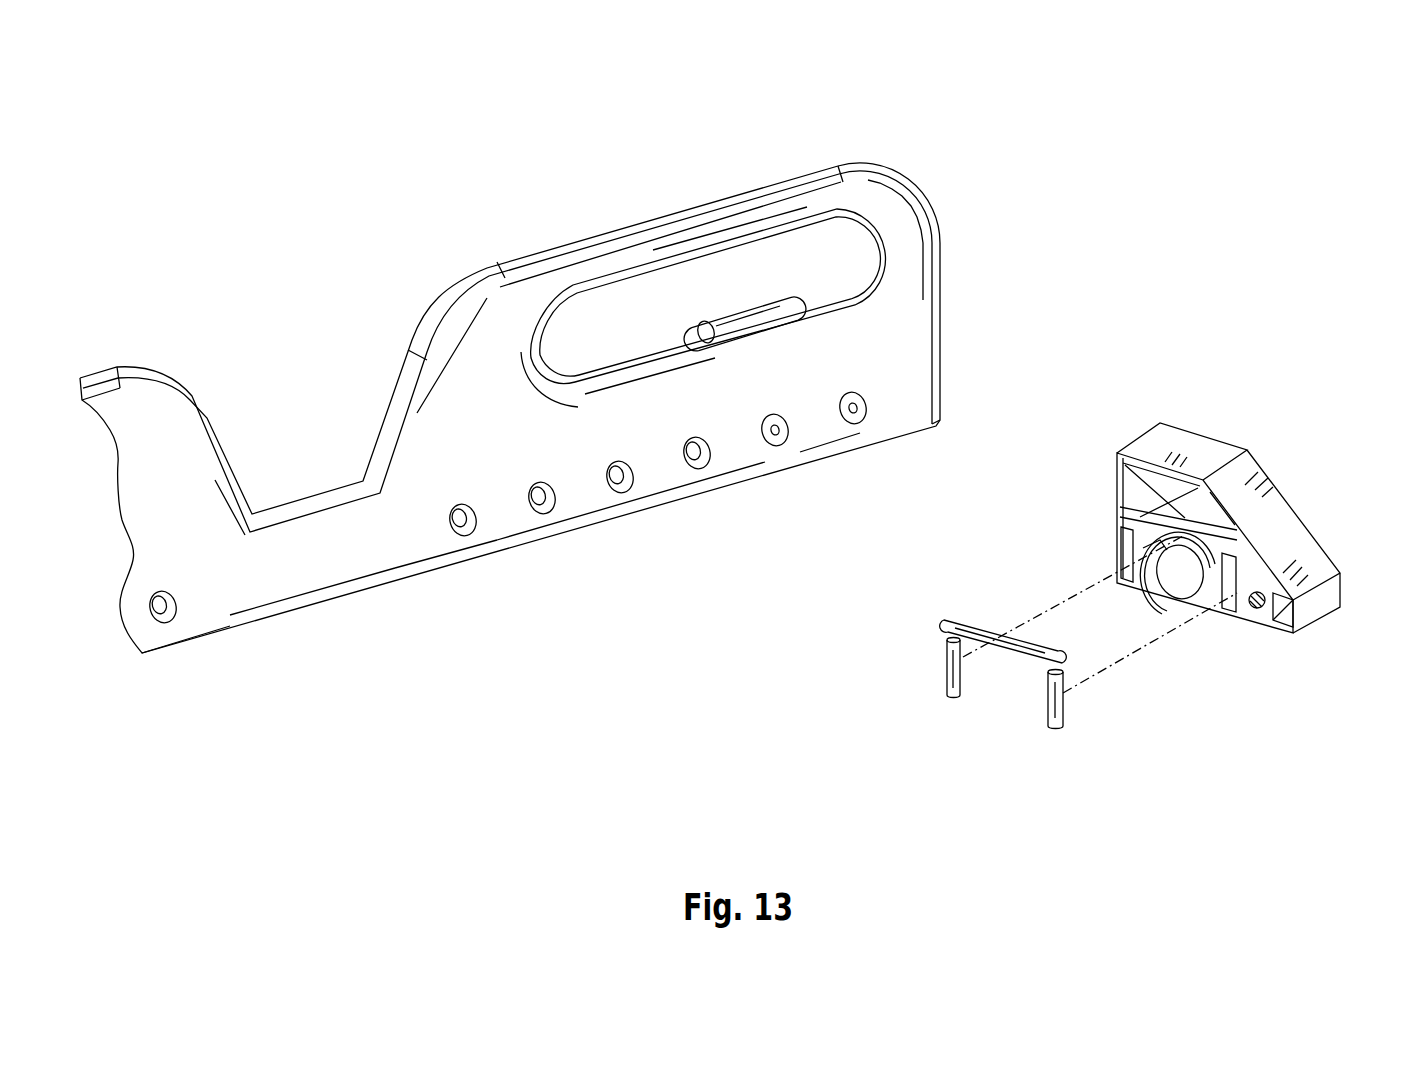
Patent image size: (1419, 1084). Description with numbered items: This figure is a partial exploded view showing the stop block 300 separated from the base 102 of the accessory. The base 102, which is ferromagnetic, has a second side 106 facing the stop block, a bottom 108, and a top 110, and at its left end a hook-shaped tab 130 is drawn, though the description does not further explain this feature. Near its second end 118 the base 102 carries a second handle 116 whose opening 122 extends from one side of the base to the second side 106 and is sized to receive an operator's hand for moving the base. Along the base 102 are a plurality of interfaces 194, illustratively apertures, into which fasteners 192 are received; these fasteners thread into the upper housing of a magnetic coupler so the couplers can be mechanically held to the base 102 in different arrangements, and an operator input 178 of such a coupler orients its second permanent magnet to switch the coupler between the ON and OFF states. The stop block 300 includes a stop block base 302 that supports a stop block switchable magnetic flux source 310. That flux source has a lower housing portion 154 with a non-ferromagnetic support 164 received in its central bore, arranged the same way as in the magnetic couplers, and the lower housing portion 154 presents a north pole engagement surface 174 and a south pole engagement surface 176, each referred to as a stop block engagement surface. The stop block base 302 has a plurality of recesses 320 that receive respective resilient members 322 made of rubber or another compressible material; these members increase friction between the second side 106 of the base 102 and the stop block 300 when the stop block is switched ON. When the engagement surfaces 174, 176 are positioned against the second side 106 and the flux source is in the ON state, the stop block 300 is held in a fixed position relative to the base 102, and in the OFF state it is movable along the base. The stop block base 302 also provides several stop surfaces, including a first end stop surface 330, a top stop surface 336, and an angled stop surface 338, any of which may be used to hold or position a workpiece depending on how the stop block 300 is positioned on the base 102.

The base 102 is at (615, 390).
The second side 106 is at (217, 585).
The bottom 108 is at (470, 580).
The top 110 is at (425, 190).
The second handle 116 is at (546, 228).
The second end 118 is at (1020, 288).
The opening 122 is at (644, 290).
The hook tab 130 is at (275, 370).
The operator input 178 is at (771, 287).
The fasteners 192 is at (867, 425).
The interfaces 194 is at (655, 510).
The stop block 300 is at (1115, 544).
The stop block base 302 is at (1203, 549).
The stop block switchable magnetic flux source 310 is at (1120, 530).
The recesses 320 is at (1128, 512).
The resilient members 322 is at (935, 685).
The first end stop surface 330 is at (1327, 603).
The top stop surface 336 is at (1200, 445).
The angled stop surface 338 is at (1290, 522).
The lower housing portion 154 is at (1222, 620).
The non-ferromagnetic support 164 is at (1181, 590).
The north pole engagement surface 174 is at (1158, 590).
The south pole engagement surface 176 is at (1193, 610).